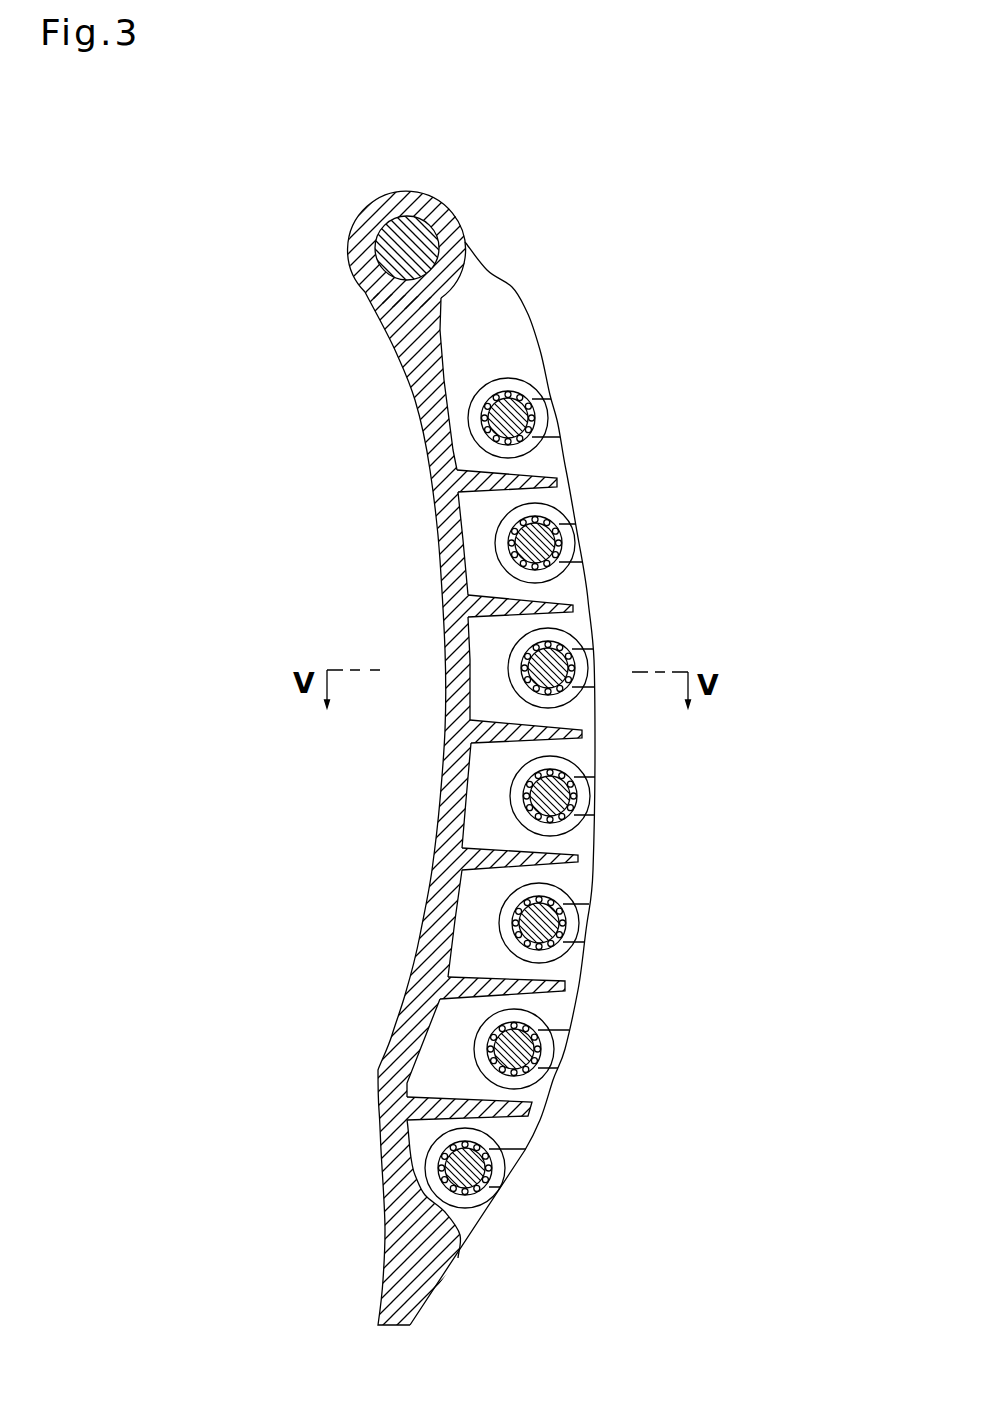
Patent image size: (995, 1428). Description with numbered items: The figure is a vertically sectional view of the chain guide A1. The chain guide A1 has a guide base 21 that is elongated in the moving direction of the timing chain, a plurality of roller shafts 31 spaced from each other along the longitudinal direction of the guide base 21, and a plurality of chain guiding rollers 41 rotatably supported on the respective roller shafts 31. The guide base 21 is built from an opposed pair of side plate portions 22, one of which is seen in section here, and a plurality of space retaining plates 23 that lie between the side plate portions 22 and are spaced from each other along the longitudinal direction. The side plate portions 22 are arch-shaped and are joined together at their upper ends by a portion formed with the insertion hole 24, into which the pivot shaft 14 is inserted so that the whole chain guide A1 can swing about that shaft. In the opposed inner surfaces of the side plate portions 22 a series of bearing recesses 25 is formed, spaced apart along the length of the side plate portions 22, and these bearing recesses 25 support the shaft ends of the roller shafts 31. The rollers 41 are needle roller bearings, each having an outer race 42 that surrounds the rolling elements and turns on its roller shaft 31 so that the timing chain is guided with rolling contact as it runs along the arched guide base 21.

The pivot shaft 14 is at (443, 218).
The guide base 21 is at (430, 432).
The side plate portions 22 is at (493, 328).
The space retaining plates 23 is at (545, 595).
The insertion hole 24 is at (407, 242).
The bearing recesses 25 is at (574, 542).
The roller shafts 31 is at (527, 404).
The chain guiding rollers 41 is at (549, 417).
The outer race 42 is at (513, 388).
The chain guide A1 is at (348, 258).